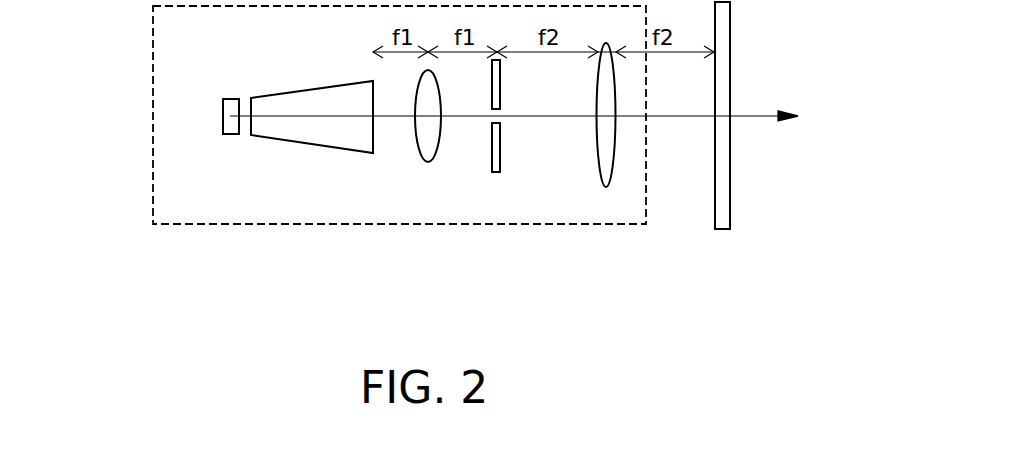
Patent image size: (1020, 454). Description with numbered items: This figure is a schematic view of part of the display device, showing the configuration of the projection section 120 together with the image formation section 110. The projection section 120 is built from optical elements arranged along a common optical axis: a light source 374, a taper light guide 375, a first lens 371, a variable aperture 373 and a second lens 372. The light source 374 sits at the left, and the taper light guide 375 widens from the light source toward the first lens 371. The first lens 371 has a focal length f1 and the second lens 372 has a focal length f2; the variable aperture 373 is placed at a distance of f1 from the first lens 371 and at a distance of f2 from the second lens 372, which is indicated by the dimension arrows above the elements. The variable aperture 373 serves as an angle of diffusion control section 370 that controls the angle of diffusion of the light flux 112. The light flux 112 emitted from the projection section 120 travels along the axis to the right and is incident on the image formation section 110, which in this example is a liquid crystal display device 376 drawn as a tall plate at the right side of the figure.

The projection section 120 is at (152, 194).
The light flux 112 is at (764, 117).
The light source 374 is at (228, 126).
The taper light guide 375 is at (309, 132).
The first lens 371 is at (430, 148).
The variable aperture 373 is at (497, 167).
The angle of diffusion control section 370 is at (502, 190).
The second lens 372 is at (609, 175).
The liquid crystal display device 376 is at (724, 220).
The image formation section 110 is at (727, 161).